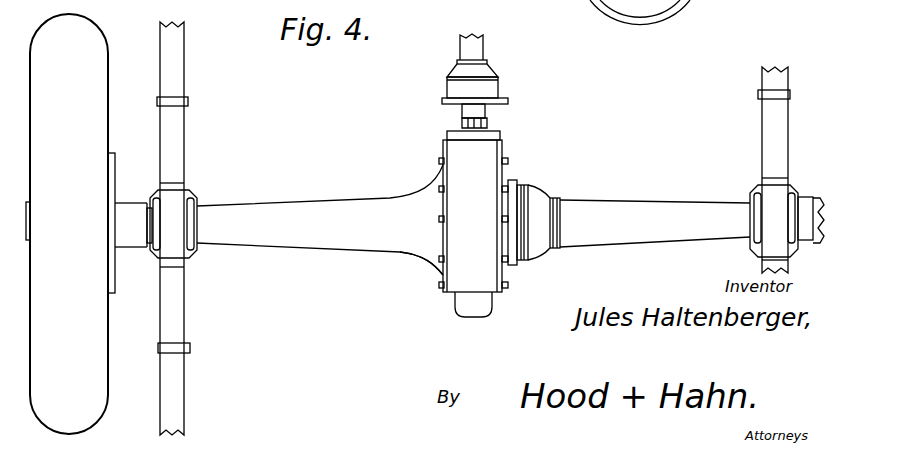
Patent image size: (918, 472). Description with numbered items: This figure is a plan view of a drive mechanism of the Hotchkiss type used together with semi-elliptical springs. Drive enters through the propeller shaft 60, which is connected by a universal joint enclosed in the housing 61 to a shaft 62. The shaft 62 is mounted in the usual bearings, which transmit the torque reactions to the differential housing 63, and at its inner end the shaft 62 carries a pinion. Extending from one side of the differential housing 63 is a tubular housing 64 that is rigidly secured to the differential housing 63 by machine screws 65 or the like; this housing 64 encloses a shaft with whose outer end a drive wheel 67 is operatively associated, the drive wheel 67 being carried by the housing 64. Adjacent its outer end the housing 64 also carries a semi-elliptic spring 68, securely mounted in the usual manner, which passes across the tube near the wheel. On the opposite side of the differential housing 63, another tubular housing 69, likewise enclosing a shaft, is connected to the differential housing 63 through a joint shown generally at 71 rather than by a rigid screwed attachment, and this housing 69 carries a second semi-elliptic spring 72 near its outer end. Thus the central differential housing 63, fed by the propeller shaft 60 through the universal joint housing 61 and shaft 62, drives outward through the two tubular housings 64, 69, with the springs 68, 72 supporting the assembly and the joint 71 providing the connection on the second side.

The propeller shaft 60 is at (483, 48).
The universal joint housing 61 is at (492, 86).
The shaft 62 is at (480, 126).
The differential housing 63 is at (478, 281).
The tubular housing 64 is at (255, 231).
The machine screws 65 is at (440, 261).
The drive wheel 67 is at (97, 48).
The semi-elliptic spring 68 is at (172, 124).
The tubular housing 69 is at (635, 230).
The joint 71 is at (550, 185).
The second semi-elliptic spring 72 is at (766, 136).